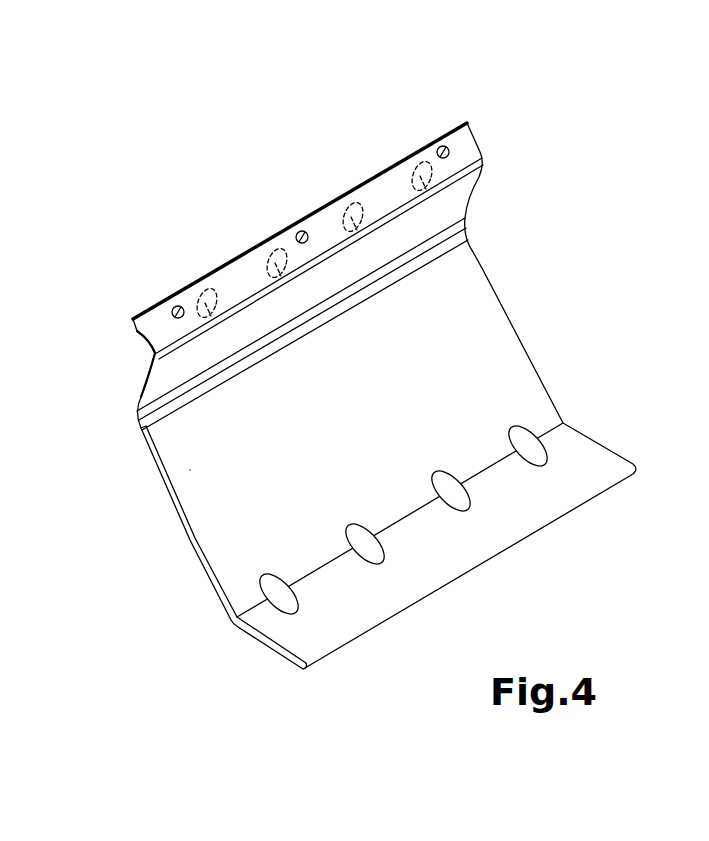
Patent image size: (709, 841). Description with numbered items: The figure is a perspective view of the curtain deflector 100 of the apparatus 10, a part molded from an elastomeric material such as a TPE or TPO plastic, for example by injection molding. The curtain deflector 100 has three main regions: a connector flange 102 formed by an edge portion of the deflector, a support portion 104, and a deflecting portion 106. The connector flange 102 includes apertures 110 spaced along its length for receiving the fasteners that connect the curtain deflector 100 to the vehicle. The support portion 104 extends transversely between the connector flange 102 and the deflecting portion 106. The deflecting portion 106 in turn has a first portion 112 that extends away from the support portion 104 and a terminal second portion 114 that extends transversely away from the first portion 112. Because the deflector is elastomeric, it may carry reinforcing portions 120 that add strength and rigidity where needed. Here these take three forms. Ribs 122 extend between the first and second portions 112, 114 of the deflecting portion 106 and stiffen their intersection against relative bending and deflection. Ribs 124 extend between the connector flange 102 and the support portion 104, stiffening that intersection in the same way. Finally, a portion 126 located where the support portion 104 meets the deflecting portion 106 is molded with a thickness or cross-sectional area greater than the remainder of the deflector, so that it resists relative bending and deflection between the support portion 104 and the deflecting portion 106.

The mounting system 10 is at (163, 668).
The curtain deflector 100 is at (341, 431).
The connector flange 102 is at (285, 243).
The support portion 104 is at (170, 367).
The deflecting portion 106 is at (228, 539).
The apertures 110 is at (179, 306).
The first portion 112 is at (215, 490).
The second portion 114 is at (338, 611).
The reinforcing portions 120 is at (300, 390).
The ribs 122 is at (522, 440).
The ribs 124 is at (215, 310).
The portion of increased cross-sectional area 126 is at (130, 392).